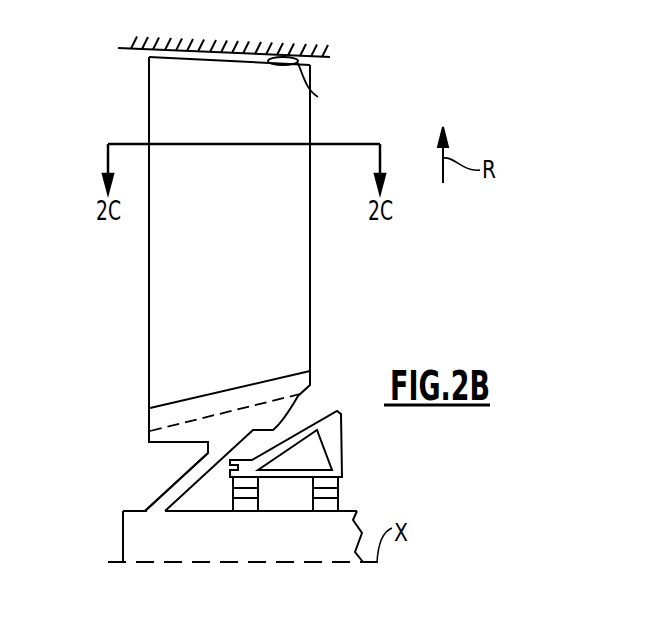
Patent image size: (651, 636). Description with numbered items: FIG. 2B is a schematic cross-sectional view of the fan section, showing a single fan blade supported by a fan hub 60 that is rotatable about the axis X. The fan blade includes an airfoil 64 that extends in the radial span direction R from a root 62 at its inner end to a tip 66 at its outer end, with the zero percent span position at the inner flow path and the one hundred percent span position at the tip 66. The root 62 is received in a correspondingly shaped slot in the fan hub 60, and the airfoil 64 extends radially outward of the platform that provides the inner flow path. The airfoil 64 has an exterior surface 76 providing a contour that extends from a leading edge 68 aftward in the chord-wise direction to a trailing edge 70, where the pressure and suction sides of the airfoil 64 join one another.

The fan hub 60 is at (172, 493).
The root 62 is at (150, 431).
The airfoil 64 is at (333, 274).
The tip 66 is at (318, 97).
The leading edge 68 is at (149, 221).
The trailing edge 70 is at (310, 185).
The exterior surface 76 is at (283, 245).